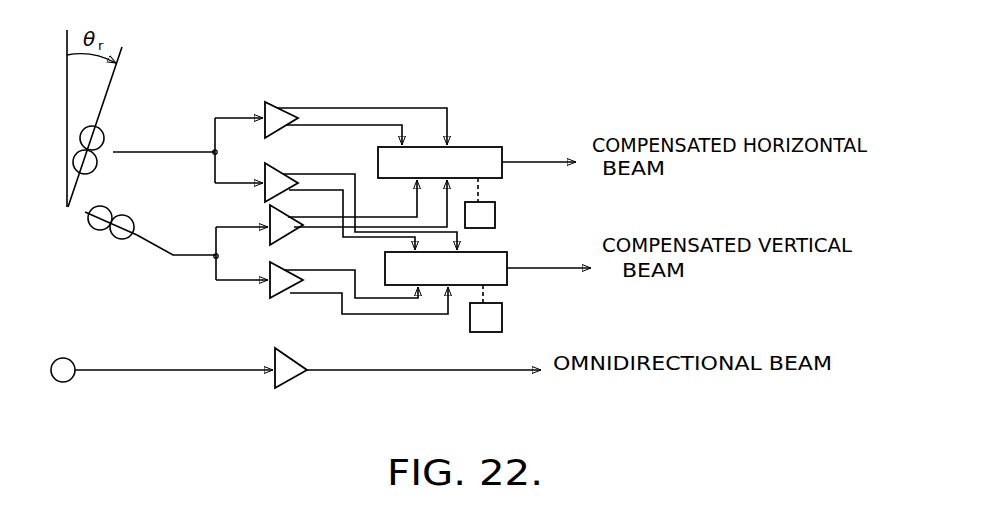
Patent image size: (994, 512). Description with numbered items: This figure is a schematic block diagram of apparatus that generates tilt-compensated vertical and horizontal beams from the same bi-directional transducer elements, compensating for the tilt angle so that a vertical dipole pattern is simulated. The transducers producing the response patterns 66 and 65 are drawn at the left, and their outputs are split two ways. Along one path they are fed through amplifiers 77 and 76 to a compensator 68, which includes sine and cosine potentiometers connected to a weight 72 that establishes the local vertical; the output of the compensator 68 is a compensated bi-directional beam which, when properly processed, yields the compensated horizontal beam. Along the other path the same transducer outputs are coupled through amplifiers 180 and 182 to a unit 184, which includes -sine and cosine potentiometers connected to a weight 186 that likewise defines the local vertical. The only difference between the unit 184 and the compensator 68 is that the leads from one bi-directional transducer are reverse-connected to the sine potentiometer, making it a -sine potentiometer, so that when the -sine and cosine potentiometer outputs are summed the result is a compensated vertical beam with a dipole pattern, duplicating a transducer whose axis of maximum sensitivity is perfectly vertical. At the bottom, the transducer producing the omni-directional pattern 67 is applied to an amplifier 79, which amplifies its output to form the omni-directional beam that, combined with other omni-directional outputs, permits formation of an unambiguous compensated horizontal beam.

The bi-directional transducer response pattern 66 is at (104, 133).
The bi-directional transducer response pattern 65 is at (123, 212).
The omni-directional transducer pattern 67 is at (66, 358).
The amplifier 77 is at (278, 102).
The amplifier 76 is at (285, 157).
The amplifier 180 is at (285, 237).
The amplifier 182 is at (285, 295).
The amplifier 79 is at (284, 354).
The compensator 68 is at (475, 144).
The unit with -sine and cosine potentiometers 184 is at (485, 250).
The weight 72 is at (497, 217).
The weight 186 is at (503, 308).